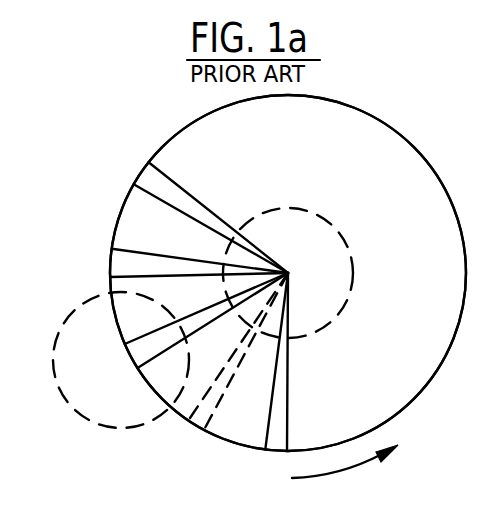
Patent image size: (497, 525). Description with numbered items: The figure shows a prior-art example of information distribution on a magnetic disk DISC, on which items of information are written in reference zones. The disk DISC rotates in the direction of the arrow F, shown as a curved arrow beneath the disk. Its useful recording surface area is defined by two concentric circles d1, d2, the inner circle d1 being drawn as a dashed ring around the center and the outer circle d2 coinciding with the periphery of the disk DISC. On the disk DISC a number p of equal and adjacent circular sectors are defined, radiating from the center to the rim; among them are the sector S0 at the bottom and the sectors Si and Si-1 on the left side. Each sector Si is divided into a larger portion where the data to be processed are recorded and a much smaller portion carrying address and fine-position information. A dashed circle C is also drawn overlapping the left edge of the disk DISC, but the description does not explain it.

The magnetic disk DISC is at (423, 152).
The circle d2 is at (298, 95).
The circle d1 is at (281, 207).
The circular sector Si is at (109, 283).
The circular sector Si-1 is at (173, 416).
The circular sector S0 is at (247, 452).
The circle of head positions C is at (82, 418).
The arrow F is at (345, 470).